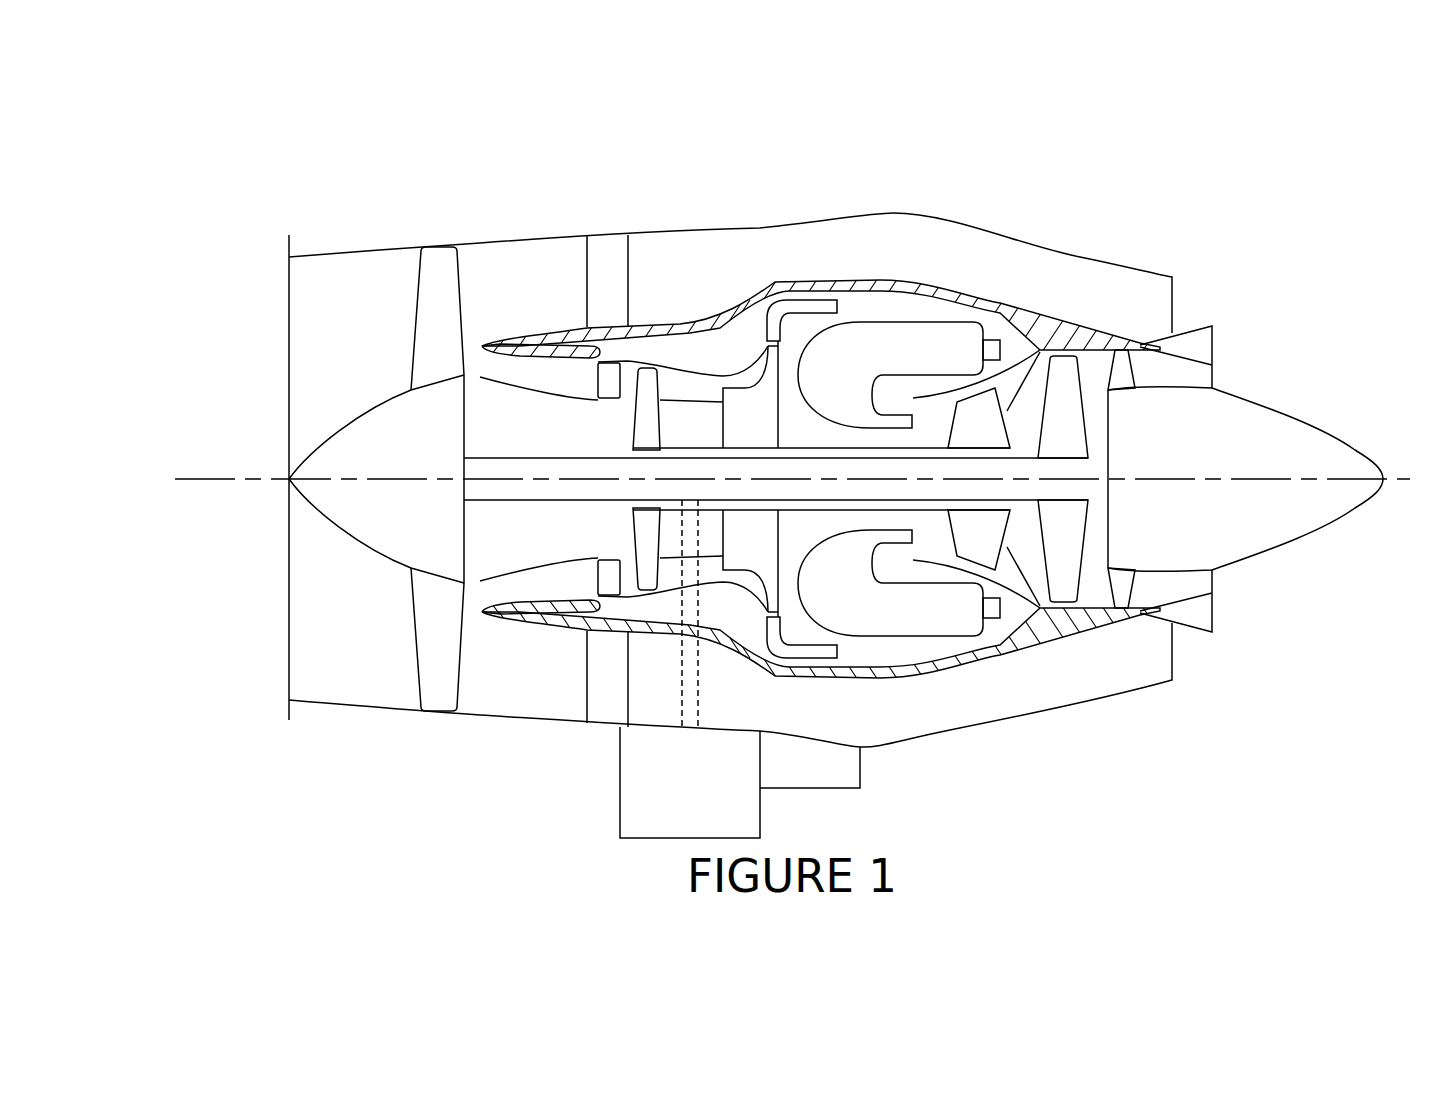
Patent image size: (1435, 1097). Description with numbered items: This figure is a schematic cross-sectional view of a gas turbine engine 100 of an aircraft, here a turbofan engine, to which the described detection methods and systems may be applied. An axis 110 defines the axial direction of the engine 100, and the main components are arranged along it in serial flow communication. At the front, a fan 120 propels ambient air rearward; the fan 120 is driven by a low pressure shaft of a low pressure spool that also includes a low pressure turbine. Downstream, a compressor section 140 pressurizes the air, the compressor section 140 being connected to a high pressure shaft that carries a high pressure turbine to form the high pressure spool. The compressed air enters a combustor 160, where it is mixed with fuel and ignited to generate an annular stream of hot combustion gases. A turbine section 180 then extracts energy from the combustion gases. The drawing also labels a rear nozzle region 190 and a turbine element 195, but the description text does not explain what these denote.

The gas turbine engine 100 is at (1040, 171).
The engine centerline axis 110 is at (205, 478).
The fan section 120 is at (433, 628).
The compressor section 140 is at (681, 380).
The combustor section 160 is at (893, 340).
The turbine section 180 is at (1022, 543).
The exhaust nozzle section 190 is at (1068, 366).
The high pressure turbine 195 is at (977, 405).